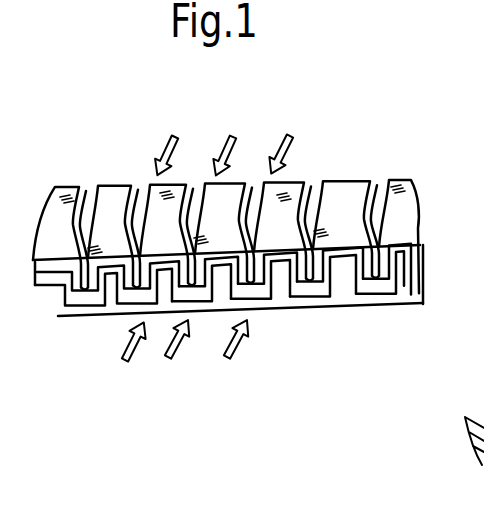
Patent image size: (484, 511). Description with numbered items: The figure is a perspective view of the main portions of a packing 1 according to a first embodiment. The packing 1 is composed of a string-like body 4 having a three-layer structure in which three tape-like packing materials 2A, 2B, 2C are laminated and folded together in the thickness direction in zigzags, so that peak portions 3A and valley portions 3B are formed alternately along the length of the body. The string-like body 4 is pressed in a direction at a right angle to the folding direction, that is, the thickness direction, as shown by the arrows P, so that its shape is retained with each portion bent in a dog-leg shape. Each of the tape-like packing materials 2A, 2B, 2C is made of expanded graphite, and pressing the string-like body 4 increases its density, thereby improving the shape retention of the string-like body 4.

The packing 1 is at (124, 182).
The tape-like packing material 2A is at (92, 312).
The tape-like packing material 2B is at (301, 308).
The tape-like packing material 2C is at (193, 310).
The peak portions 3A is at (272, 186).
The valley portions 3B is at (280, 308).
The string-like body 4 is at (330, 181).
The arrows P is at (220, 144).